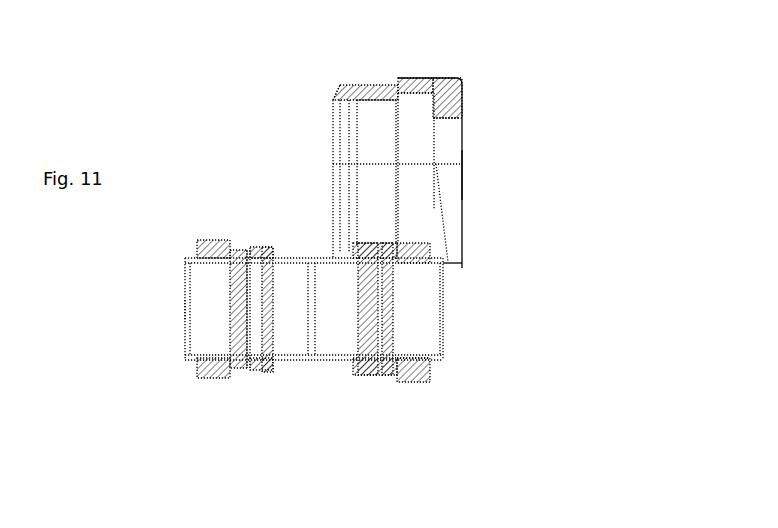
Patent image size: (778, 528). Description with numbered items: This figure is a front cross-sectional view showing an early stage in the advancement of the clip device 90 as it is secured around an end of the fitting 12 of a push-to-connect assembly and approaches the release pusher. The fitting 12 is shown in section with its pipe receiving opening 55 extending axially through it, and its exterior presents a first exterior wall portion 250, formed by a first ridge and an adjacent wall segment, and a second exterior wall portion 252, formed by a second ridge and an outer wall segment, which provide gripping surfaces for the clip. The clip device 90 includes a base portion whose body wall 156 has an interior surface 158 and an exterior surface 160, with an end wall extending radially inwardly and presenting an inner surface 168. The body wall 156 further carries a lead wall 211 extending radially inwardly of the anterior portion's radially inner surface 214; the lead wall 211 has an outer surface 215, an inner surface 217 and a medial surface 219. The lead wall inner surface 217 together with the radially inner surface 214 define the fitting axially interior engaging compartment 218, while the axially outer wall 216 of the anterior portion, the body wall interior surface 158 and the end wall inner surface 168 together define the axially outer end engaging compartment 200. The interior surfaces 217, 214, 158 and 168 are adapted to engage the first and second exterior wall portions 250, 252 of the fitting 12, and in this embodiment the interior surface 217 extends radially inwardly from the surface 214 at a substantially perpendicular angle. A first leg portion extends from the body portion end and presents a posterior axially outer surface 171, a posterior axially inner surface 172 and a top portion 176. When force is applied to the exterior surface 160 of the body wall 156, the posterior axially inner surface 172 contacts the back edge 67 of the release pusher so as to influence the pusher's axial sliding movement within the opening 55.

The fitting 12 is at (218, 405).
The pipe receiving opening 55 is at (165, 310).
The back edge 67 is at (445, 263).
The clip device 90 is at (583, 197).
The body wall 156 is at (448, 80).
The body wall interior surface 158 is at (405, 93).
The body wall exterior surface 160 is at (435, 73).
The end wall inner surface 168 is at (432, 103).
The posterior axially outer surface 171 is at (460, 218).
The posterior axially inner surface 172 is at (438, 212).
The first leg portion top portion 176 is at (460, 173).
The axially outer end engaging compartment 200 is at (407, 124).
The lead wall 211 is at (335, 102).
The body wall anterior portion radially inner surface 214 is at (368, 95).
The lead wall outer surface 215 is at (332, 100).
The axially outer wall 216 is at (388, 83).
The lead wall inner surface 217 is at (348, 102).
The fitting axially interior engaging compartment 218 is at (370, 123).
The lead wall medial surface 219 is at (345, 112).
The first exterior wall portion 250 is at (372, 385).
The second exterior wall portion 252 is at (410, 385).